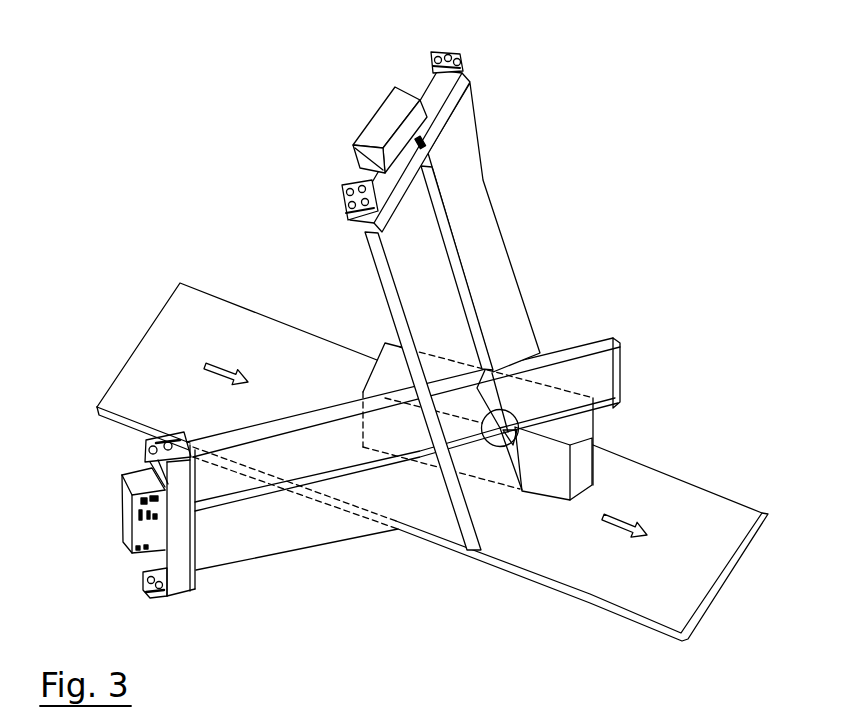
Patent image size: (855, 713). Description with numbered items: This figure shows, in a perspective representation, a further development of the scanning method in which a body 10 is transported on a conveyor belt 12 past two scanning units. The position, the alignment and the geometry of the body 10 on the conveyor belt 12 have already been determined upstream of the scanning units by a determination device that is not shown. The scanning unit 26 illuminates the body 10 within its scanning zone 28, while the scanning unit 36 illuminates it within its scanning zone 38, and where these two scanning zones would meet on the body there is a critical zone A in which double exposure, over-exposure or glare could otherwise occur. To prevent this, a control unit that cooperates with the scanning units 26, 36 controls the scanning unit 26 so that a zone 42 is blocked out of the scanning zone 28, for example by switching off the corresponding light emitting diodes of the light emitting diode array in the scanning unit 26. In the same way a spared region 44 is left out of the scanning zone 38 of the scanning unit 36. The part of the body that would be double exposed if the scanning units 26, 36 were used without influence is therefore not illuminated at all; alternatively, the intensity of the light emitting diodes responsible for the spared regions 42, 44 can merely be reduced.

The body 10 is at (387, 377).
The conveyor belt 12 is at (683, 494).
The scanning unit 26 is at (172, 567).
The scanning zone 28 is at (590, 376).
The scanning unit 36 is at (460, 56).
The scanning zone 38 is at (495, 268).
The zone 42 is at (280, 491).
The spared region 44 is at (440, 215).
The critical zone A is at (501, 410).